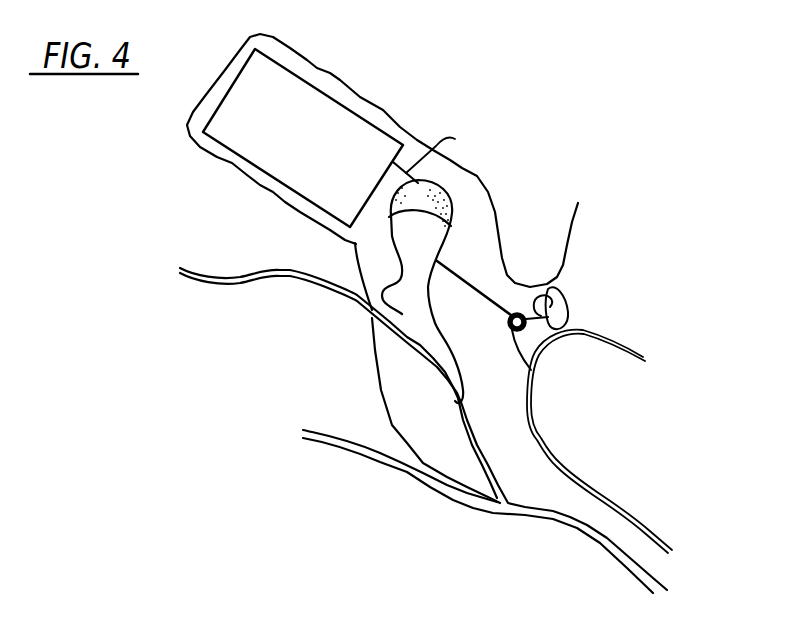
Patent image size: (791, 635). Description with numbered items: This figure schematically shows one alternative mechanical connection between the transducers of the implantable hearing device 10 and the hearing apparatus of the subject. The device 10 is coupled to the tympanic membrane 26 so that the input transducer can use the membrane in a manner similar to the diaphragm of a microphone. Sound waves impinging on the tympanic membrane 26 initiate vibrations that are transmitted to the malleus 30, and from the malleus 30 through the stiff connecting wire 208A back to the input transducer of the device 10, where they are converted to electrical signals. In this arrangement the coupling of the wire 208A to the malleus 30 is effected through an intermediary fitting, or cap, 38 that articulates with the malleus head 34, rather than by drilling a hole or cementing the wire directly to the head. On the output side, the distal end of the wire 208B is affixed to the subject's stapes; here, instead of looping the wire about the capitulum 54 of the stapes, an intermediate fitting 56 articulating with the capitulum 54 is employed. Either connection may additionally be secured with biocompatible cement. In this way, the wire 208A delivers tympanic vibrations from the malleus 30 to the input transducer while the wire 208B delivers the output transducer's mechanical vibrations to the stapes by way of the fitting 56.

The implantable hearing device 10 is at (303, 148).
The connecting wire 208A is at (464, 147).
The intermediary fitting (cap) 38 is at (453, 199).
The malleus head 34 is at (443, 232).
The wire 208B is at (465, 282).
The malleus 30 is at (426, 241).
The capitulum 54 is at (539, 333).
The intermediate fitting 56 is at (531, 377).
The tympanic membrane 26 is at (437, 426).